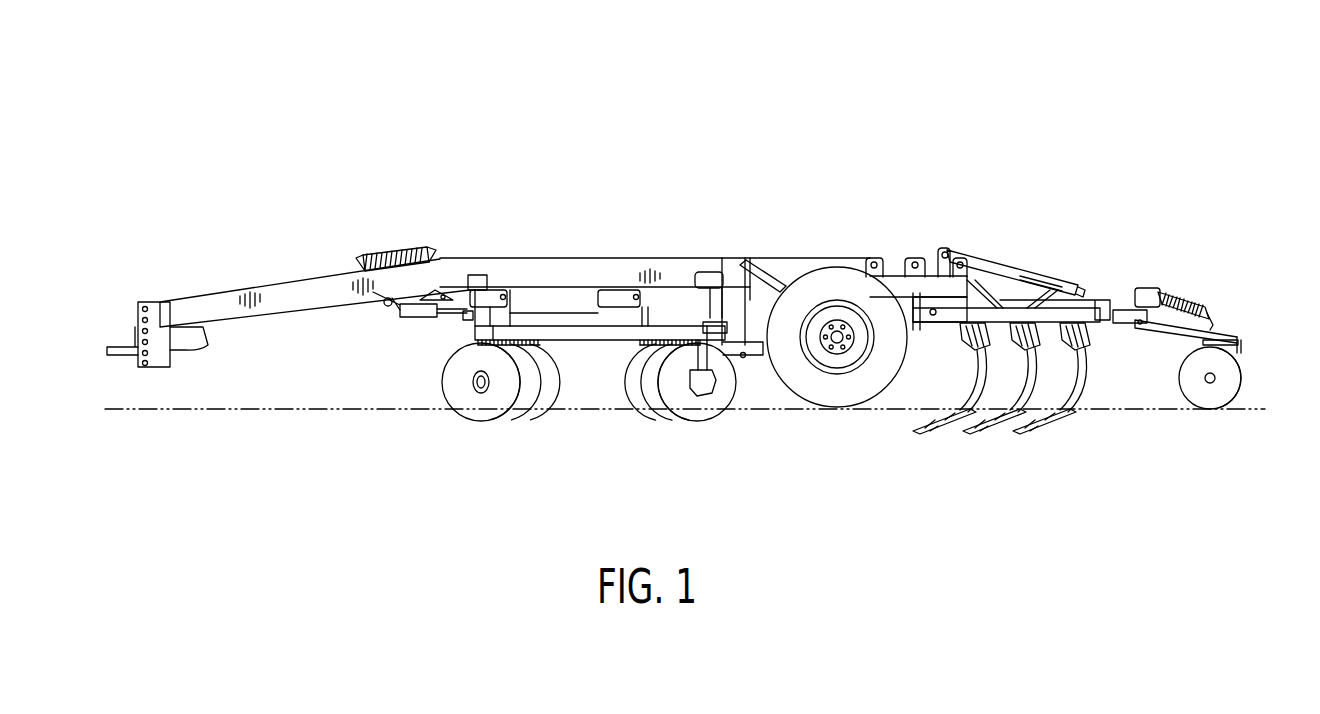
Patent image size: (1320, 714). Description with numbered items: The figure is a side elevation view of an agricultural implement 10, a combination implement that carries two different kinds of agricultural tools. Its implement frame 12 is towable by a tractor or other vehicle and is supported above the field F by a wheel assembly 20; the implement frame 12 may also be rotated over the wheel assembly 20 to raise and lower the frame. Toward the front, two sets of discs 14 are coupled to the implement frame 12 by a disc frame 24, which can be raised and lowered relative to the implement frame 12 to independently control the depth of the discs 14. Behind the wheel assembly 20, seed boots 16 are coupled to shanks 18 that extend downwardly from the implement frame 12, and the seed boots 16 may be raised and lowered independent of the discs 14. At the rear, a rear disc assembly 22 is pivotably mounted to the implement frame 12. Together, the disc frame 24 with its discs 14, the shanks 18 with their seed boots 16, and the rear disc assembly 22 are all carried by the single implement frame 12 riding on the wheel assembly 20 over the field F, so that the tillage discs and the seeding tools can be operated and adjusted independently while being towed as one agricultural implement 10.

The agricultural implement 10 is at (958, 117).
The implement frame 12 is at (582, 267).
The discs 14 is at (657, 425).
The seed boots 16 is at (918, 427).
The shanks 18 is at (1098, 386).
The wheel assembly 20 is at (811, 384).
The rear disc assembly 22 is at (1217, 393).
The disc frame 24 is at (548, 330).
The field F is at (188, 410).